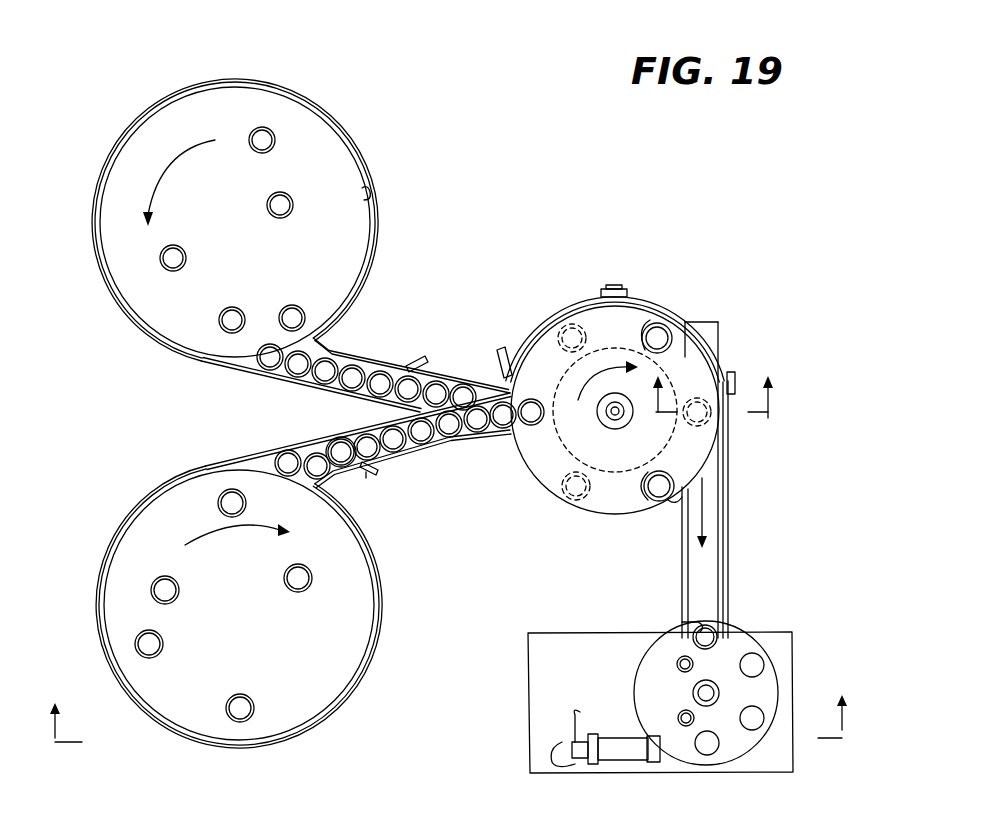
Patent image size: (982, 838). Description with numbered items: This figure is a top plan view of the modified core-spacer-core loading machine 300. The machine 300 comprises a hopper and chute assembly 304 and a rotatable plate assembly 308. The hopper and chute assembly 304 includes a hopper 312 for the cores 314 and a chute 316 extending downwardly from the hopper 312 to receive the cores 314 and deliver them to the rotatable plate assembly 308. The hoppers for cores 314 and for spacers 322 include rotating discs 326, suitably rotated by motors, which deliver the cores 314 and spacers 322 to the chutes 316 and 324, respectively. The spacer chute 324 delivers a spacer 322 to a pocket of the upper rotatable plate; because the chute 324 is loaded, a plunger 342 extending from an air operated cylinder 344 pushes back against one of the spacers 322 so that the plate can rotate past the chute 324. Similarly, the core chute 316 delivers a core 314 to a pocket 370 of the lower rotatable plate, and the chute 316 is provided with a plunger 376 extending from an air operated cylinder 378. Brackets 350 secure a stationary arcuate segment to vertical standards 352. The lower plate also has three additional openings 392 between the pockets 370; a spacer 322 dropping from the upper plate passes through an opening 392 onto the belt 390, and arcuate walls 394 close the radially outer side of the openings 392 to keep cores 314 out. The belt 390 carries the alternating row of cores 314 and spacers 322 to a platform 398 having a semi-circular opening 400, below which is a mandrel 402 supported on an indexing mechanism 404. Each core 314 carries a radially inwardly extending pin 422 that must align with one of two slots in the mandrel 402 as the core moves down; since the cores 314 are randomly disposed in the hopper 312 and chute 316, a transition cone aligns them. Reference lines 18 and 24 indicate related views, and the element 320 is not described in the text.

The core-spacer-core loading machine 300 is at (495, 217).
The hopper and chute assembly 304 is at (318, 125).
The rotatable plate assembly 308 is at (583, 521).
The hopper 312 is at (372, 194).
The core 314 is at (290, 195).
The chute 316 is at (352, 360).
The lower wheel containers 320 is at (370, 622).
The spacer 322 is at (252, 698).
The chute 324 is at (445, 455).
The rotating disc 326 is at (370, 258).
The plunger 342 is at (378, 472).
The air operated cylinder 344 is at (370, 476).
The bracket 350 is at (612, 288).
The vertical standard 352 is at (630, 294).
The pocket 370 is at (560, 492).
The plunger 376 is at (340, 465).
The air operated cylinder 378 is at (422, 356).
The belt 390 is at (730, 572).
The opening 392 is at (652, 476).
The arcuate wall 394 is at (662, 510).
The platform 398 is at (725, 612).
The semi-circular opening 400 is at (692, 630).
The mandrel 402 is at (665, 668).
The indexing mechanism 404 is at (780, 762).
The pin 422 is at (262, 128).
The section line 24 is at (716, 414).
The section line 18 is at (450, 701).